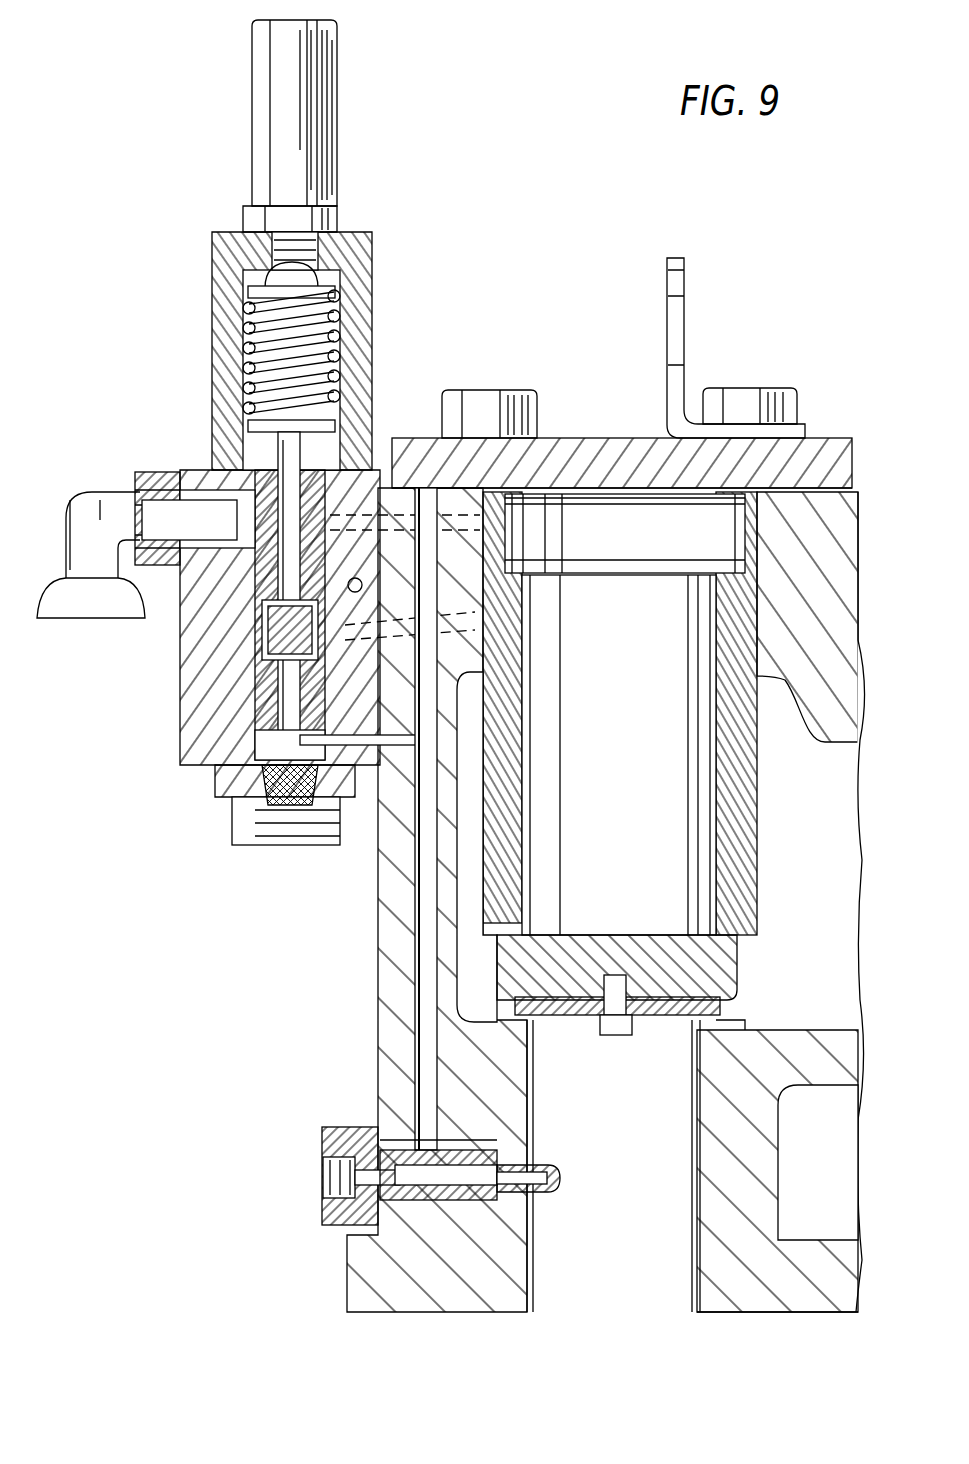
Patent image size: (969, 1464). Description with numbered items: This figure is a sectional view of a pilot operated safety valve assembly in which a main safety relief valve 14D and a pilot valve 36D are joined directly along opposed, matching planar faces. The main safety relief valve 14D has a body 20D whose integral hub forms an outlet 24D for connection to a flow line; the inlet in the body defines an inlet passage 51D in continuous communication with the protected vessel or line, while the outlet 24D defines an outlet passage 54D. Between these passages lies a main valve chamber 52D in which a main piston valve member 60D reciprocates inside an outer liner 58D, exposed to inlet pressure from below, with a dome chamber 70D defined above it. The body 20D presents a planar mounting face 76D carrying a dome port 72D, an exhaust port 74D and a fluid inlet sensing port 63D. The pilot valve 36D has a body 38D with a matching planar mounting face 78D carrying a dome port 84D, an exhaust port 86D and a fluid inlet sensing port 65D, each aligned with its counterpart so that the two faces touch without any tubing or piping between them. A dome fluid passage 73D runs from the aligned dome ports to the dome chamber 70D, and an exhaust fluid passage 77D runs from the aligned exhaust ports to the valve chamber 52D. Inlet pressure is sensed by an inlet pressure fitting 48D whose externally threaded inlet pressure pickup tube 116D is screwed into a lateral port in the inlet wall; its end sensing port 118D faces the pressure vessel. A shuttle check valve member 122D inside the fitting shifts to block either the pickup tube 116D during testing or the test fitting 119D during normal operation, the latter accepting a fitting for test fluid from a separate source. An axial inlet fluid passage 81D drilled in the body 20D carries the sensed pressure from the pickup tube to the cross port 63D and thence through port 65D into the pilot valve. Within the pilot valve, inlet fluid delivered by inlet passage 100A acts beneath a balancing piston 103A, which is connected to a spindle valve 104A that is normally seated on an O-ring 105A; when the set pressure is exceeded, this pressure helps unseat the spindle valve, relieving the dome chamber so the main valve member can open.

The main safety relief valve 14D is at (816, 408).
The body 20D is at (384, 1053).
The outlet 24D is at (845, 1080).
The pilot valve 36D is at (208, 305).
The pilot valve body 38D is at (213, 765).
The inlet pressure fitting 48D is at (325, 1227).
The inlet passage 51D is at (652, 1277).
The main valve chamber 52D is at (490, 965).
The outlet passage 54D is at (852, 832).
The outer liner 58D is at (740, 780).
The main piston valve member 60D is at (750, 882).
The fluid inlet sensing port 63D is at (366, 812).
The fluid inlet sensing port 65D is at (418, 745).
The dome chamber 70D is at (590, 510).
The dome port 72D is at (360, 490).
The dome fluid passage 73D is at (505, 556).
The exhaust port 74D is at (270, 645).
The planar mounting face 76D is at (262, 690).
The exhaust fluid passage 77D is at (455, 633).
The planar mounting face 78D is at (455, 693).
The axial inlet fluid passage 81D is at (430, 915).
The dome port 84D is at (402, 510).
The exhaust port 86D is at (470, 603).
The inlet passage 100A is at (290, 840).
The balancing piston 103A is at (270, 742).
The spindle valve 104A is at (262, 527).
The O-ring 105A is at (205, 600).
The inlet pressure pickup tube 116D is at (480, 1150).
The end sensing port 118D is at (555, 1194).
The test fitting 119D is at (350, 1130).
The shuttle check valve member 122D is at (372, 1183).